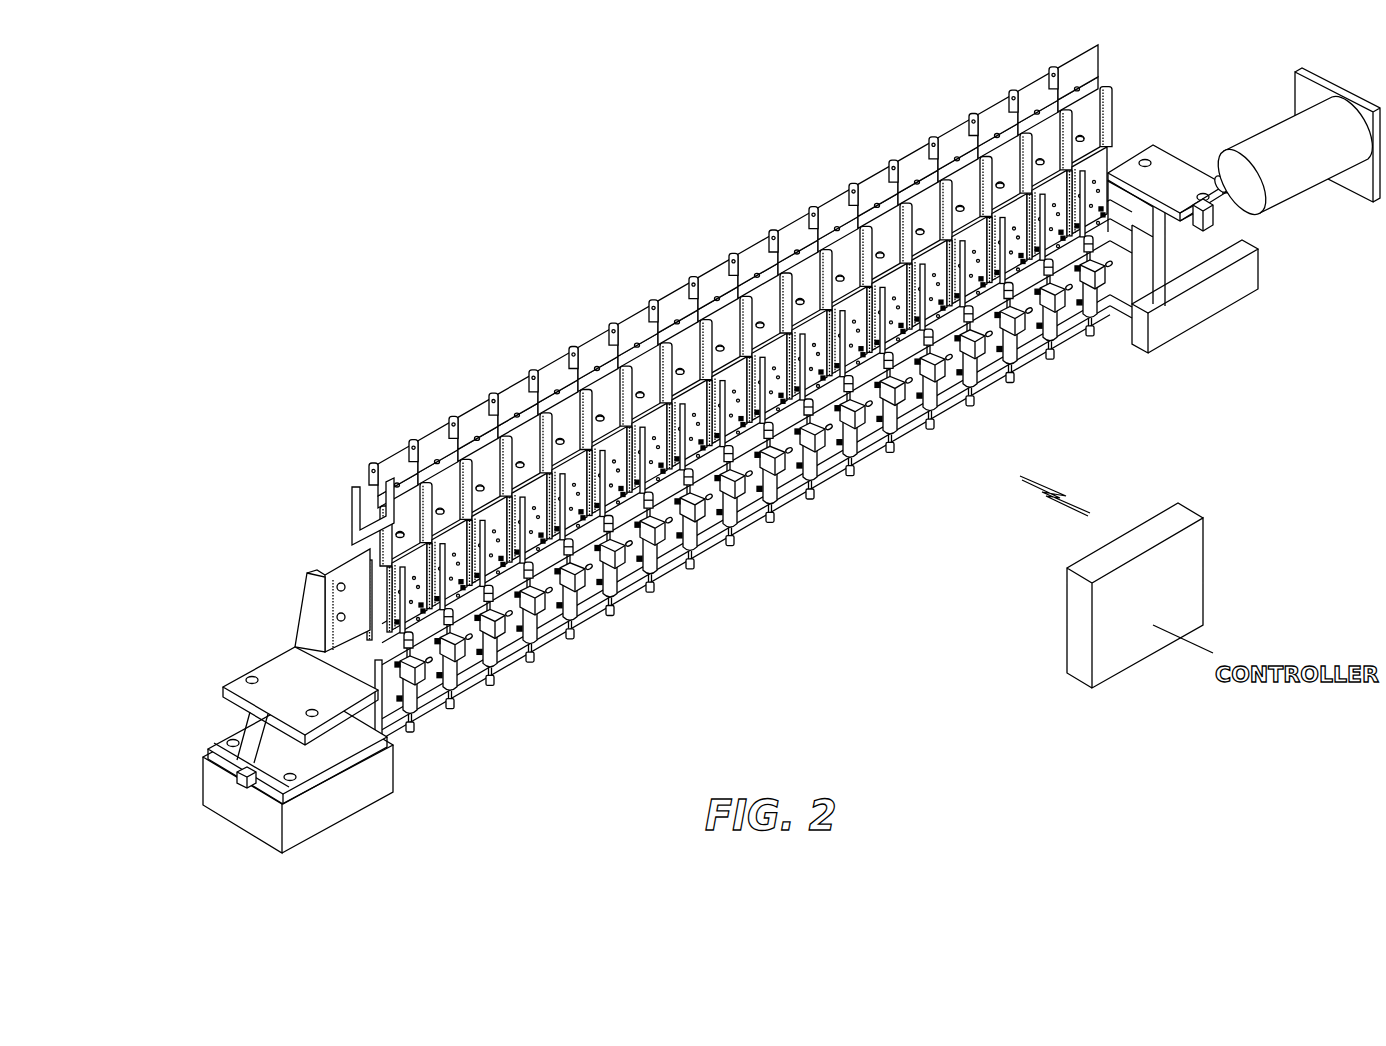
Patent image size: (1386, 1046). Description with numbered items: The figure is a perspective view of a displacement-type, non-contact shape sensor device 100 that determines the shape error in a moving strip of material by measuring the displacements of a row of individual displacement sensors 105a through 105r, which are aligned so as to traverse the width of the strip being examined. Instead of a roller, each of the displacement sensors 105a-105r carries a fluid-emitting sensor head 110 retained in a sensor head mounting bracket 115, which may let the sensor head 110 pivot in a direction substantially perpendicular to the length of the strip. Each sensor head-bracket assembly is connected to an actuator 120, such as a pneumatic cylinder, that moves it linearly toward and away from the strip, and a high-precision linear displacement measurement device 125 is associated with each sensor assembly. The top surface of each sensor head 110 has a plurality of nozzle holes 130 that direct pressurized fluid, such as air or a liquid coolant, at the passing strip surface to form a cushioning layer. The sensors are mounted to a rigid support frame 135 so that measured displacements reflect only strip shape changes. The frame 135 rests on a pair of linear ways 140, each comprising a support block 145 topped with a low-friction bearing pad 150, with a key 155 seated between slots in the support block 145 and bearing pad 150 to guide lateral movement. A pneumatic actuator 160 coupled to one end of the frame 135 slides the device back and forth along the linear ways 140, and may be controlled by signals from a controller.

The shape sensor device 100 is at (758, 449).
The displacement sensor 105a is at (338, 461).
The displacement sensor 105r is at (1134, 102).
The fluid-emitting sensor head 110 is at (628, 326).
The sensor head mounting bracket 115 is at (357, 522).
The actuator 120 is at (853, 337).
The linear displacement measurement device 125 is at (700, 538).
The nozzle holes 130 is at (838, 196).
The support frame 135 is at (308, 611).
The linear ways 140 is at (408, 797).
The support block 145 is at (395, 762).
The bearing pad 150 is at (383, 738).
The key 155 is at (235, 780).
The actuator 160 is at (1312, 175).